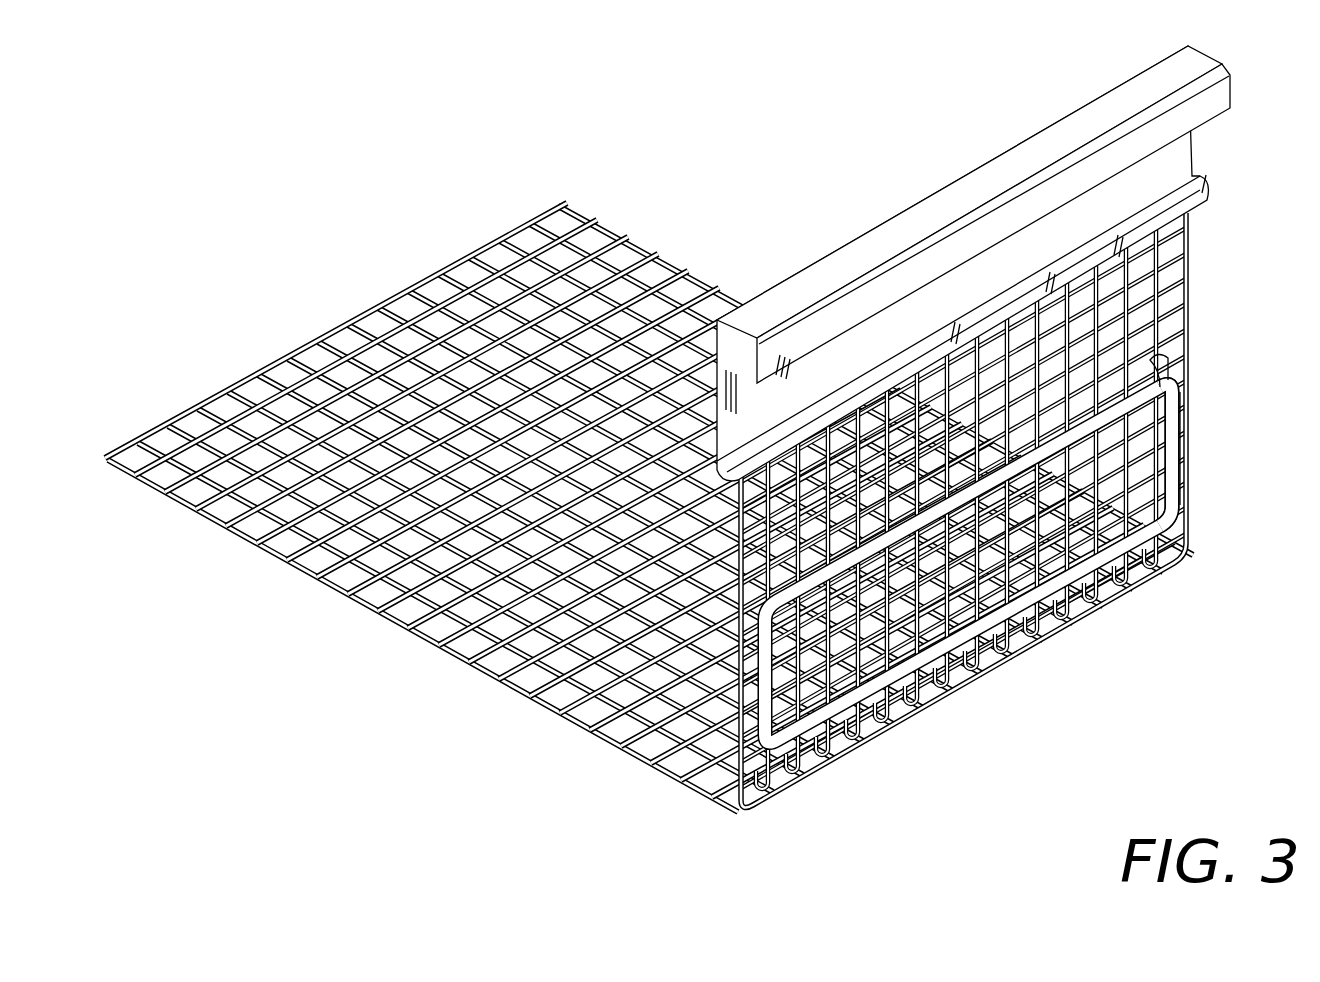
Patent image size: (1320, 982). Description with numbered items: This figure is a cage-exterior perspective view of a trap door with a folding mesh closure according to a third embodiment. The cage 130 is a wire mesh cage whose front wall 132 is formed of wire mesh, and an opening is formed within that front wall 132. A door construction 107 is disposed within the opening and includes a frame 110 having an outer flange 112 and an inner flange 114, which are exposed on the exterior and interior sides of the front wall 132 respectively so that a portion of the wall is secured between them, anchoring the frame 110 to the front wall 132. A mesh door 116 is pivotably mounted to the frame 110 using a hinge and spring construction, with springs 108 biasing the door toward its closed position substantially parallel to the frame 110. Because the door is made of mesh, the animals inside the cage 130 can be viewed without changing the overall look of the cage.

The door construction 107 is at (960, 612).
The springs 108 is at (1057, 567).
The frame 110 is at (1180, 500).
The outer flange 112 is at (1165, 397).
The inner flange 114 is at (1150, 358).
The mesh door 116 is at (1155, 463).
The cage 130 is at (688, 752).
The front wall 132 is at (1168, 268).